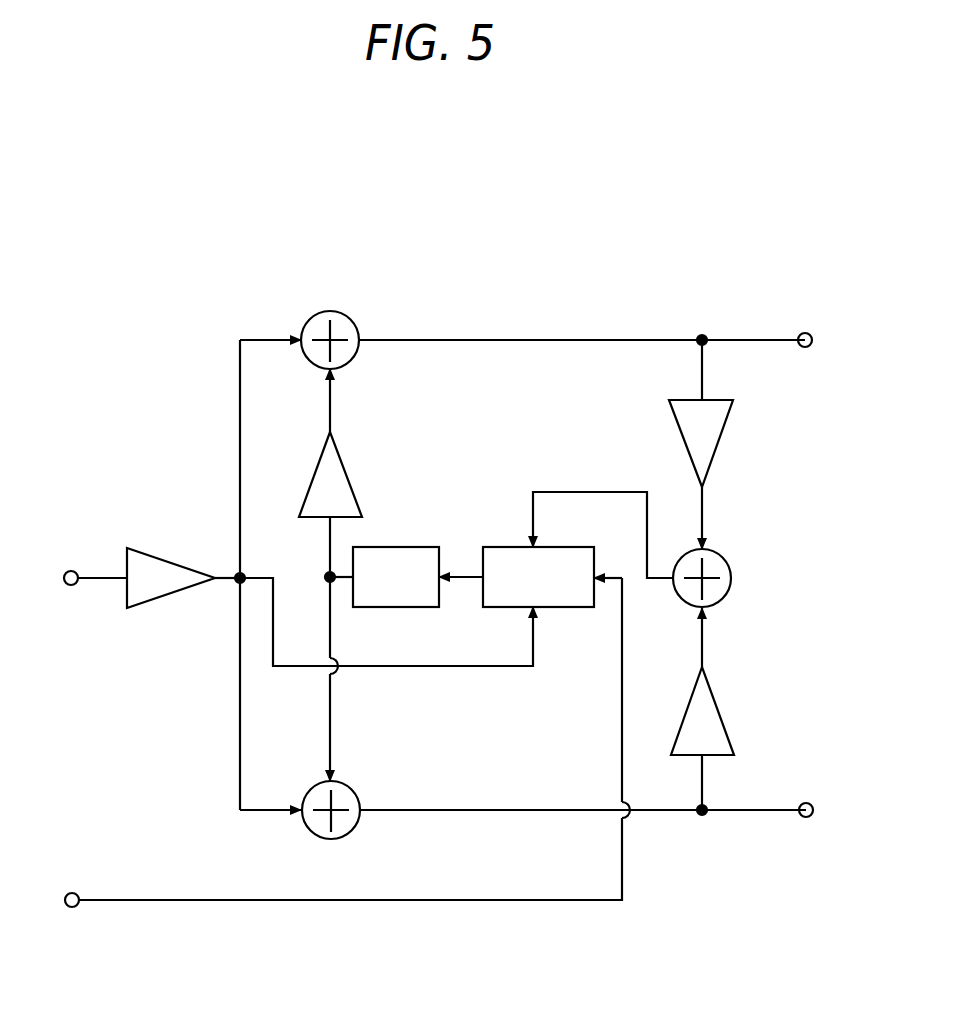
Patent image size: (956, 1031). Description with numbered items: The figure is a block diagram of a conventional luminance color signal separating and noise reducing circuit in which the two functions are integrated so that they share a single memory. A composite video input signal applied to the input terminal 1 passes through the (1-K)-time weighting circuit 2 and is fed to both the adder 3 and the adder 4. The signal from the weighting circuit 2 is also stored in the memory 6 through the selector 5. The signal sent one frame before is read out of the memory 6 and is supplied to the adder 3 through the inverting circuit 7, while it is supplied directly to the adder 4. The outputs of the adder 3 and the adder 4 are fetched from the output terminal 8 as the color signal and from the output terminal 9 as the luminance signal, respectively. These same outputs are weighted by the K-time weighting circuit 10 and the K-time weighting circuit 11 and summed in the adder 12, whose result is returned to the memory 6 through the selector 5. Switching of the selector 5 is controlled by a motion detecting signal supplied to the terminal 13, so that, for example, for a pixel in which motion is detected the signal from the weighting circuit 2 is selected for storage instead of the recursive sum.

The input terminal 1 is at (72, 587).
The (1-K)-time weighting circuit 2 is at (163, 597).
The adder 3 is at (353, 322).
The adder 4 is at (355, 793).
The selector 5 is at (500, 545).
The memory 6 is at (418, 545).
The inverting circuit 7 is at (345, 465).
The output terminal 8 is at (808, 349).
The output terminal 9 is at (810, 802).
The K-time weighting circuit 10 is at (715, 452).
The K-time weighting circuit 11 is at (725, 722).
The adder 12 is at (728, 565).
The terminal 13 is at (73, 909).